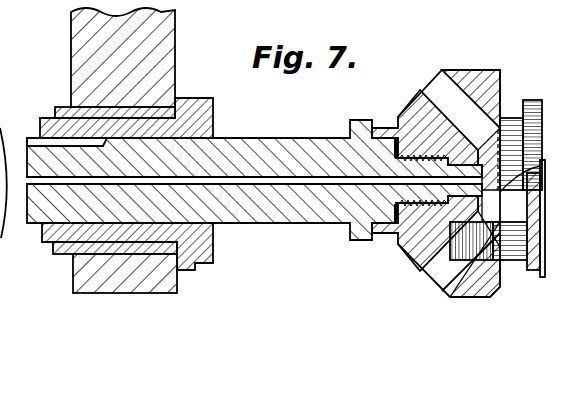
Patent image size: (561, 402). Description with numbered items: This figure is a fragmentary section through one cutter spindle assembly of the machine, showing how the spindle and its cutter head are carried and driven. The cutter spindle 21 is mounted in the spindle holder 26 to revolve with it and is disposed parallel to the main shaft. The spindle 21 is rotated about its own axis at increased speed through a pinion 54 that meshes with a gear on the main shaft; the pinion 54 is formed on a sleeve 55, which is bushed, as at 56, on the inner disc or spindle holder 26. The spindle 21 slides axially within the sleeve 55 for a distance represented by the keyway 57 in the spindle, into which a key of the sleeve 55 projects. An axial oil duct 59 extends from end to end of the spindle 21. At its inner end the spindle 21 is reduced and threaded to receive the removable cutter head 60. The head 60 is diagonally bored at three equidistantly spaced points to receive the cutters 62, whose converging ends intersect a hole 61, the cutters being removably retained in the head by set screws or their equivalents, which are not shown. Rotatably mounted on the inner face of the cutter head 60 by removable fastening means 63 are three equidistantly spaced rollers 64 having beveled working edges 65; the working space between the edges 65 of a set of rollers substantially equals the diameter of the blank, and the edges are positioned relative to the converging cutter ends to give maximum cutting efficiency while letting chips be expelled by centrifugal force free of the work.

The cutter spindle 21 is at (268, 150).
The spindle holder 26 is at (164, 44).
The pinion 54 is at (5, 222).
The sleeve 55 is at (173, 128).
The bushing 56 is at (68, 112).
The keyway 57 is at (35, 142).
The axial oil duct 59 is at (272, 186).
The cutter head 60 is at (465, 66).
The hole 61 is at (487, 168).
The cutter 62 is at (425, 99).
The removable fastening means 63 is at (485, 270).
The roller 64 is at (523, 117).
The beveled working edge 65 is at (542, 100).